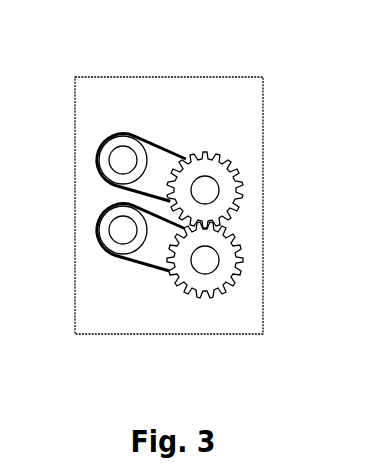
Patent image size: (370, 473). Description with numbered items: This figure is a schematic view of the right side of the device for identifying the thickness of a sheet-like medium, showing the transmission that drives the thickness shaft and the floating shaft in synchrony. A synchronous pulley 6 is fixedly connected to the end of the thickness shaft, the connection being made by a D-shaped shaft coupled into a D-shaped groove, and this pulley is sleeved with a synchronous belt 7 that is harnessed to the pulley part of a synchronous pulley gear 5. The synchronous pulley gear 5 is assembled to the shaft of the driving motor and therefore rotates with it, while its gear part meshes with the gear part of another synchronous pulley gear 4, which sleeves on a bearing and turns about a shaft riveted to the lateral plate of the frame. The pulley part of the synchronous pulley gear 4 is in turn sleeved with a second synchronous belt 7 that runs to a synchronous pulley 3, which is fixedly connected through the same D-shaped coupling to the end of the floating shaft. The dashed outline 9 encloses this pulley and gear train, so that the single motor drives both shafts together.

The synchronous pulley 3 is at (105, 152).
The synchronous pulley gear 4 is at (232, 173).
The synchronous pulley gear 5 is at (235, 248).
The synchronous pulley 6 is at (105, 233).
The synchronous belt 7 is at (163, 152).
The housing 9 is at (165, 77).